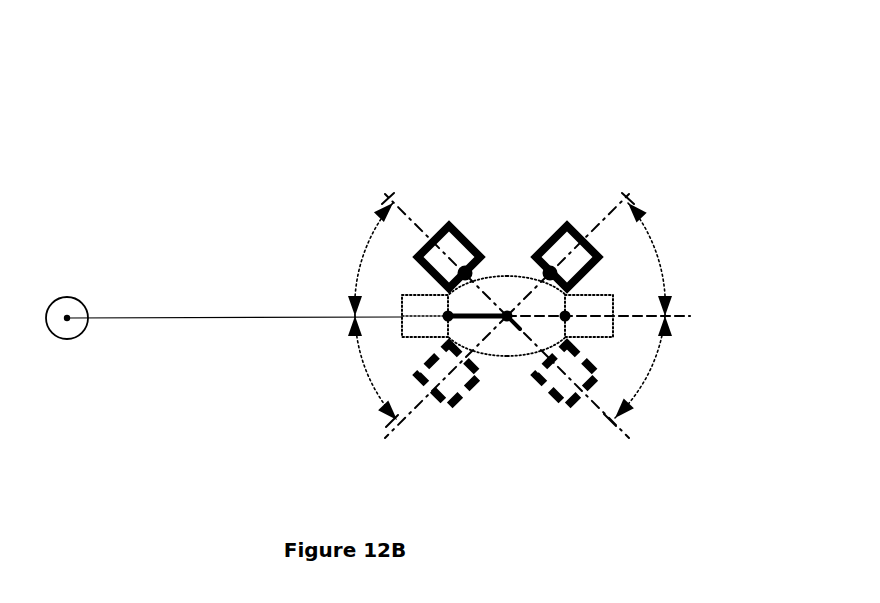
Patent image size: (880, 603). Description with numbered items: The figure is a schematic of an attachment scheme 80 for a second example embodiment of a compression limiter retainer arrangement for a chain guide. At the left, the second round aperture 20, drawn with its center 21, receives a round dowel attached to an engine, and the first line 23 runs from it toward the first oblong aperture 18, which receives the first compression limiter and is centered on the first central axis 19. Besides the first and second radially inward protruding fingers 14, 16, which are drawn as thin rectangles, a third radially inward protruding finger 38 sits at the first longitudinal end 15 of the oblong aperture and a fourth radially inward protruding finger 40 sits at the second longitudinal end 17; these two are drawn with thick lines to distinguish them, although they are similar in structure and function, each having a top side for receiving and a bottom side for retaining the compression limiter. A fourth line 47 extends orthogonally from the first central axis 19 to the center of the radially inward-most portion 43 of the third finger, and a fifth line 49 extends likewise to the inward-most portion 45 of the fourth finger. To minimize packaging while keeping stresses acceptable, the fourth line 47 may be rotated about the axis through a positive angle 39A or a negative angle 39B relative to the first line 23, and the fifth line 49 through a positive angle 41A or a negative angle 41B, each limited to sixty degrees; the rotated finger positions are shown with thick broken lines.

The attachment scheme 80 is at (655, 145).
The second round aperture 20 is at (67, 297).
The pivot axis 21 is at (70, 322).
The first line 23 is at (167, 318).
The first radially inward protruding finger 14 is at (402, 338).
The second radially inward protruding finger 16 is at (580, 328).
The first oblong aperture 18 is at (508, 357).
The first central axis 19 is at (506, 311).
The third radially inward protruding finger 38 is at (446, 226).
The fourth radially inward protruding finger 40 is at (565, 226).
The radially inward-most portion 43 is at (460, 273).
The radially inward-most portion 45 is at (555, 274).
The fourth line 47 is at (491, 277).
The fifth line 49 is at (527, 281).
The first longitudinal end 15 is at (466, 346).
The second longitudinal end 17 is at (548, 346).
The positive angle 39A is at (363, 242).
The negative angle 39B is at (370, 392).
The positive angle 41A is at (658, 251).
The negative angle 41B is at (654, 370).